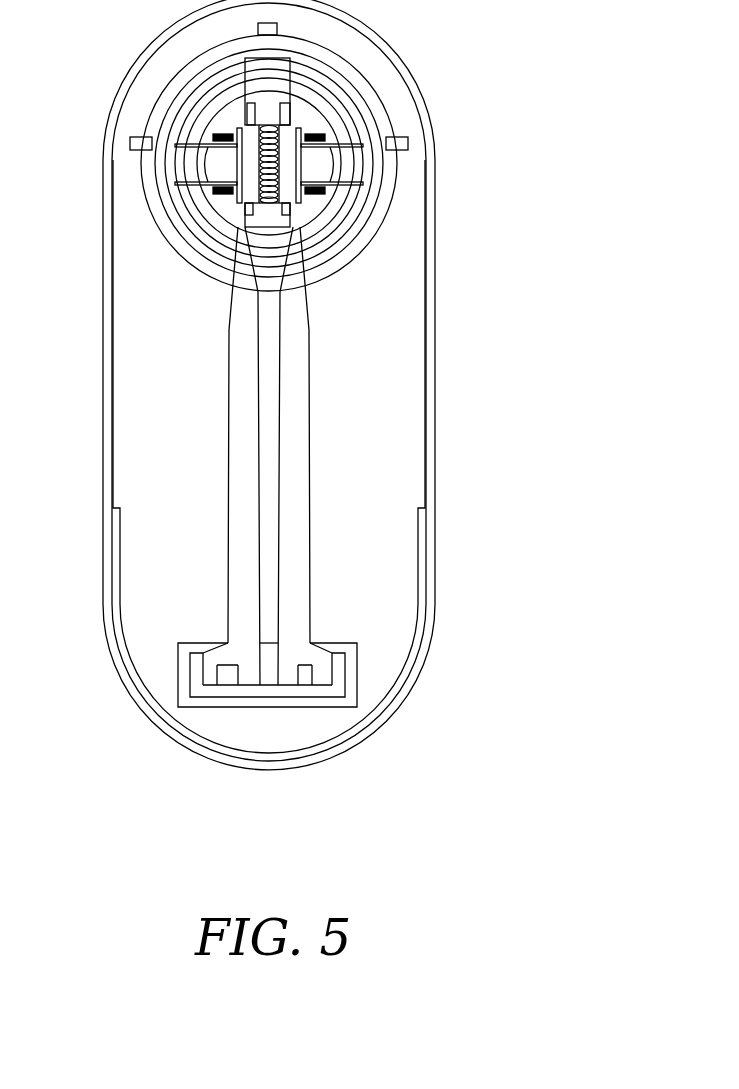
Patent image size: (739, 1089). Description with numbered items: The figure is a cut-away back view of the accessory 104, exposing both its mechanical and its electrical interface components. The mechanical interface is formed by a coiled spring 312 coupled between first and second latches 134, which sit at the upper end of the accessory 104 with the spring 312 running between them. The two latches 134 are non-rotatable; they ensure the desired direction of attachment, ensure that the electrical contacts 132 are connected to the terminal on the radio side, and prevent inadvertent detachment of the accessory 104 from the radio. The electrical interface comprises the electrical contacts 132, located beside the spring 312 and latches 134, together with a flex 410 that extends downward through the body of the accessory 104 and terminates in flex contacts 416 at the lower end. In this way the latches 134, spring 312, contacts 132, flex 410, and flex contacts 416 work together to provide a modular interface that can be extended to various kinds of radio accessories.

The accessory 104 is at (372, 667).
The latch 134 is at (270, 80).
The coiled spring 312 is at (262, 186).
The electrical contacts 132 is at (215, 137).
The flex 410 is at (243, 455).
The flex contacts 416 is at (213, 677).